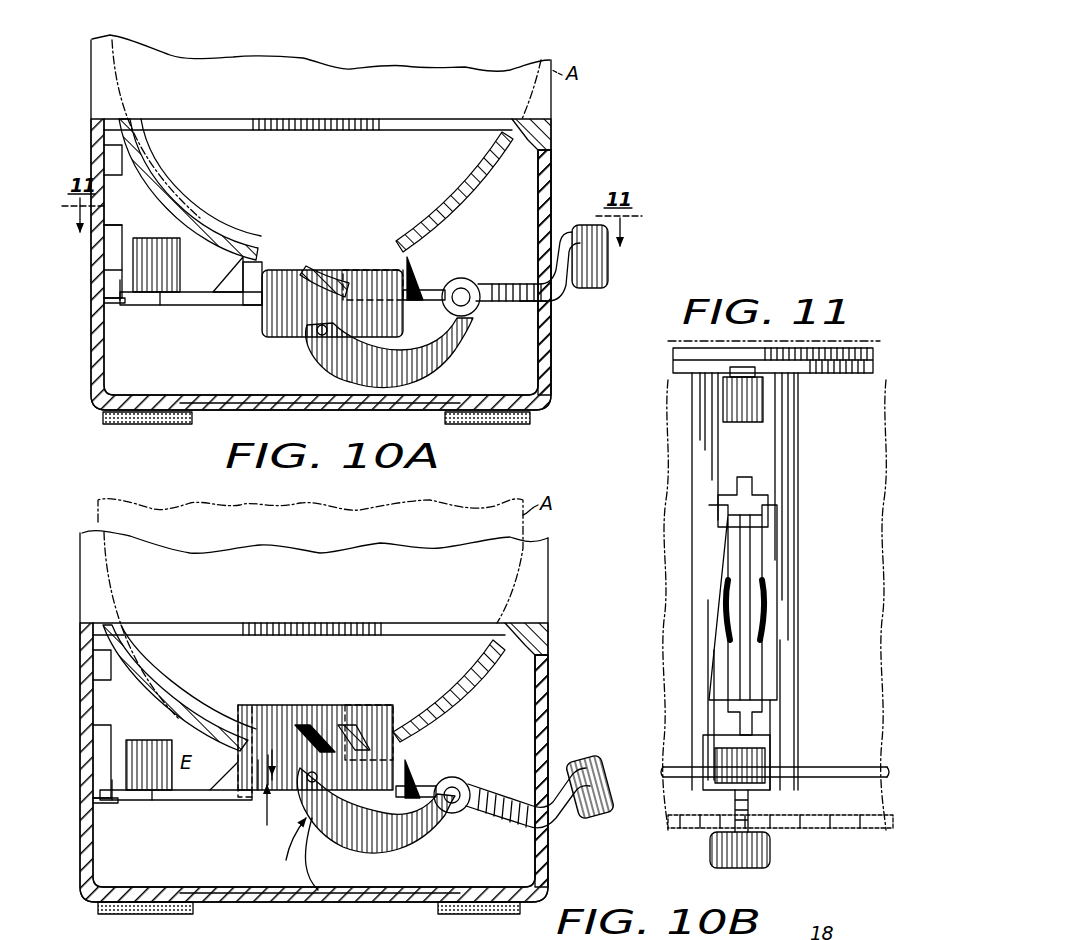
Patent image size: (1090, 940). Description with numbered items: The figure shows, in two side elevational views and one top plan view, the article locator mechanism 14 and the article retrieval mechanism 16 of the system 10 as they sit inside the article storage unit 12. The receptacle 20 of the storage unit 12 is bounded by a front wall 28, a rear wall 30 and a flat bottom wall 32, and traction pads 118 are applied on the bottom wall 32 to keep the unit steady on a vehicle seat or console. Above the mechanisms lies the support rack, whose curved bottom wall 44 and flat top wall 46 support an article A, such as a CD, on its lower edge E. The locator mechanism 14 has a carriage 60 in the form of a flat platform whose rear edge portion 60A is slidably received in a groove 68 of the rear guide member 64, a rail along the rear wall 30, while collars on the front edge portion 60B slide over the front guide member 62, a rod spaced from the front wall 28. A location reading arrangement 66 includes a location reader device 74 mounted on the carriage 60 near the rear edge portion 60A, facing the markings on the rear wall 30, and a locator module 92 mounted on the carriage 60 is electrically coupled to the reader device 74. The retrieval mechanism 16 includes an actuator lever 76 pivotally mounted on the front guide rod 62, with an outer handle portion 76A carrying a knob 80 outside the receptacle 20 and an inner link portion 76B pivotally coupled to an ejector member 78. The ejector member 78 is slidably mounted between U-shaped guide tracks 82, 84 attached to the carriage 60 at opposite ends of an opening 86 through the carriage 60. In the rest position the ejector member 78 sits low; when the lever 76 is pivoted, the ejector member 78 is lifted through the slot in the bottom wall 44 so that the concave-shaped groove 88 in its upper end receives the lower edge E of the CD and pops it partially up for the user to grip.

In FIG. 10A, the system 10 is at (585, 100).
In FIG. 10B, the system 10 is at (565, 618).
In FIG. 10A, the article storage unit 12 is at (556, 364).
In FIG. 10B, the article storage unit 12 is at (553, 668).
In FIG. 10A, the article locator mechanism 14 is at (165, 238).
In FIG. 10B, the article locator mechanism 14 is at (152, 730).
In FIG. 11, the article locator mechanism 14 is at (718, 392).
In FIG. 10A, the article retrieval mechanism 16 is at (350, 238).
In FIG. 10B, the article retrieval mechanism 16 is at (336, 708).
In FIG. 11, the article retrieval mechanism 16 is at (804, 618).
In FIG. 10A, the receptacle 20 is at (556, 150).
In FIG. 10A, the front wall 28 is at (553, 192).
In FIG. 10B, the front wall 28 is at (550, 704).
In FIG. 10A, the rear wall 30 is at (142, 142).
In FIG. 10B, the rear wall 30 is at (140, 655).
In FIG. 10A, the bottom wall 32 is at (282, 410).
In FIG. 10B, the bottom wall 32 is at (284, 902).
In FIG. 10A, the bottom wall of support rack 44 is at (456, 206).
In FIG. 10B, the bottom wall of support rack 44 is at (463, 684).
In FIG. 10A, the top wall of support rack 46 is at (428, 128).
In FIG. 10B, the top wall of support rack 46 is at (204, 625).
In FIG. 10B, the carriage 60 is at (194, 802).
In FIG. 11, the carriage 60 is at (692, 456).
In FIG. 10B, the rear edge portion 60A is at (116, 804).
In FIG. 10B, the front edge portion 60B is at (428, 790).
In FIG. 10A, the front guide member 62 is at (466, 302).
In FIG. 10B, the front guide member 62 is at (468, 786).
In FIG. 10A, the rear guide member 64 is at (112, 322).
In FIG. 10B, the rear guide member 64 is at (94, 815).
In FIG. 11, the rear guide member 64 is at (832, 373).
In FIG. 10A, the location reading arrangement 66 is at (205, 225).
In FIG. 10A, the groove 68 is at (130, 305).
In FIG. 10A, the location reader device 74 is at (120, 250).
In FIG. 10B, the location reader device 74 is at (112, 760).
In FIG. 10A, the actuator lever 76 is at (513, 280).
In FIG. 10B, the actuator lever 76 is at (552, 826).
In FIG. 11, the actuator lever 76 is at (755, 800).
In FIG. 10A, the outer handle portion 76A is at (532, 302).
In FIG. 10B, the outer handle portion 76A is at (506, 816).
In FIG. 11, the outer handle portion 76A is at (730, 796).
In FIG. 10A, the inner link portion 76B is at (450, 366).
In FIG. 10B, the inner link portion 76B is at (410, 850).
In FIG. 11, the inner link portion 76B is at (720, 668).
In FIG. 10A, the ejector member 78 is at (372, 262).
In FIG. 10B, the ejector member 78 is at (364, 745).
In FIG. 11, the ejector member 78 is at (758, 545).
In FIG. 10A, the knob 80 is at (606, 266).
In FIG. 10B, the knob 80 is at (602, 808).
In FIG. 11, the knob 80 is at (778, 586).
In FIG. 10A, the guide track 82 is at (426, 283).
In FIG. 10B, the guide track 82 is at (412, 750).
In FIG. 11, the guide track 82 is at (757, 745).
In FIG. 10A, the guide track 84 is at (230, 280).
In FIG. 10B, the guide track 84 is at (236, 765).
In FIG. 11, the guide track 84 is at (766, 497).
In FIG. 10A, the opening 86 is at (264, 330).
In FIG. 10B, the opening 86 is at (256, 802).
In FIG. 10A, the concave-shaped groove 88 is at (334, 275).
In FIG. 10B, the concave-shaped groove 88 is at (316, 728).
In FIG. 11, the concave-shaped groove 88 is at (755, 700).
In FIG. 10A, the locator module 92 is at (166, 296).
In FIG. 10B, the locator module 92 is at (154, 790).
In FIG. 10A, the traction pads 118 is at (162, 426).
In FIG. 10B, the traction pads 118 is at (168, 914).